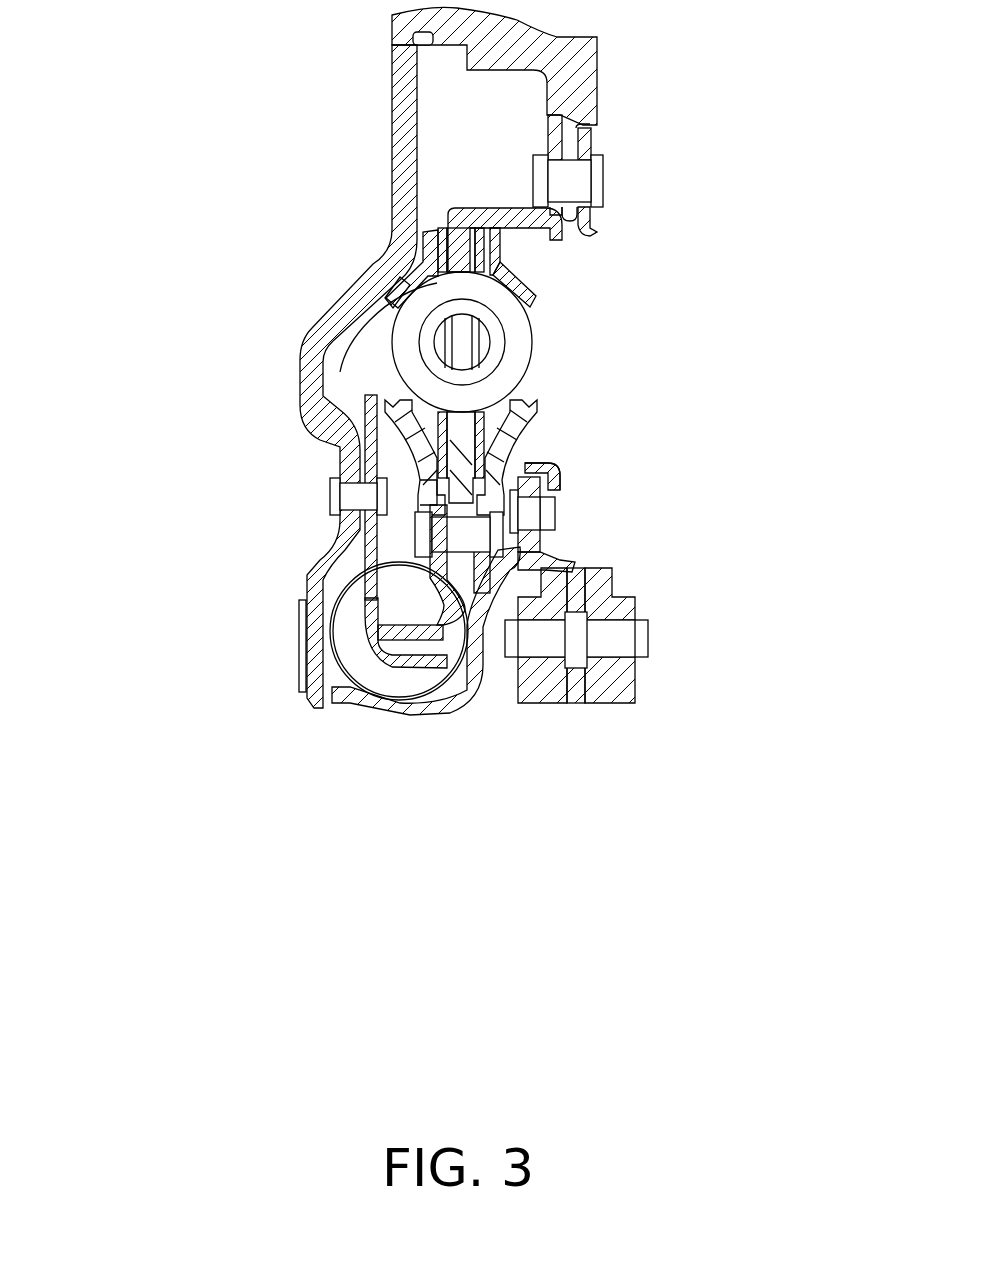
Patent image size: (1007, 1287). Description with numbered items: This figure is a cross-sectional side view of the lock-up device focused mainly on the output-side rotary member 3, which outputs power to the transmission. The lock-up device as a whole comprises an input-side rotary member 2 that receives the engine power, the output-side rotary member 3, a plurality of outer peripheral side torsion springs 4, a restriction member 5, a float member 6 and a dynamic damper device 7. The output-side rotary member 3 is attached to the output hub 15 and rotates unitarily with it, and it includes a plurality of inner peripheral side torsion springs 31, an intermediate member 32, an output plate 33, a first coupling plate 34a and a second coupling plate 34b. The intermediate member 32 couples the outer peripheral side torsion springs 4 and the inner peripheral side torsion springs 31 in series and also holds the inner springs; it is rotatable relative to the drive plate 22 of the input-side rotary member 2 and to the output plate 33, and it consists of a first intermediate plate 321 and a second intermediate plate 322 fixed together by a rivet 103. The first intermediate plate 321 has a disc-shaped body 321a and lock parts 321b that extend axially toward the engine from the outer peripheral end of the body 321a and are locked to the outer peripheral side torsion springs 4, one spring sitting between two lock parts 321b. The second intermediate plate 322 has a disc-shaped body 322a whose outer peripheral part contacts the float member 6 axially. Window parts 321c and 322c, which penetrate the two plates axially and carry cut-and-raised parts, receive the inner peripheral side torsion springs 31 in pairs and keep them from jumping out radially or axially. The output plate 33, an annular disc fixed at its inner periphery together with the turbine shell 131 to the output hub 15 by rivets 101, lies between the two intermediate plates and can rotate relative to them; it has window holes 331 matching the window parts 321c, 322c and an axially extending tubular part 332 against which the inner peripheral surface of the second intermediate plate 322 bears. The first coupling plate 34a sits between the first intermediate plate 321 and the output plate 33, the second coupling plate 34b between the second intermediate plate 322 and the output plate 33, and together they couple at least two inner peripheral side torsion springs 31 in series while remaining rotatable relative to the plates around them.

The input-side rotary member 2 is at (338, 446).
The output-side rotary member 3 is at (553, 405).
The outer peripheral side torsion springs 4 is at (382, 683).
The restriction member 5 is at (558, 484).
The float member 6 is at (473, 700).
The dynamic damper device 7 is at (640, 605).
The output hub 15 is at (600, 68).
The drive plate 22 is at (357, 635).
The inner peripheral side torsion springs 31 is at (527, 338).
The intermediate member 32 is at (533, 442).
The output plate 33 is at (530, 232).
The first coupling plate 34a is at (400, 392).
The second coupling plate 34b is at (525, 392).
The rivets 101 is at (603, 180).
The rivet 103 is at (415, 530).
The turbine shell 131 is at (598, 229).
The first intermediate plate 321 is at (417, 457).
The body 321a is at (420, 507).
The lock parts 321b is at (423, 640).
The window parts 321c is at (373, 333).
The second intermediate plate 322 is at (504, 460).
The body 322a is at (518, 500).
The window parts 322c is at (533, 307).
The window holes 331 is at (393, 300).
The tubular part 332 is at (500, 208).